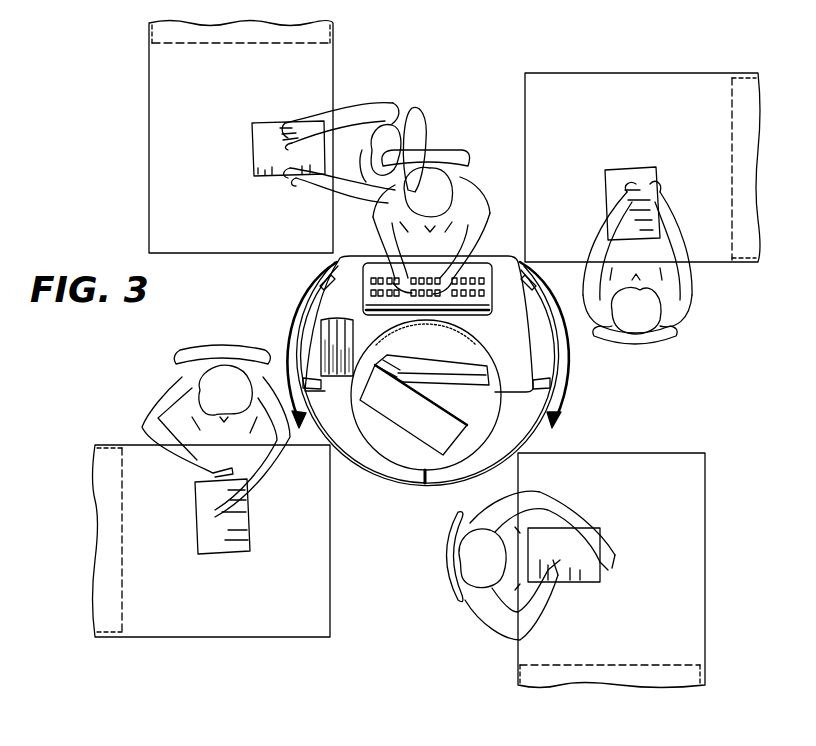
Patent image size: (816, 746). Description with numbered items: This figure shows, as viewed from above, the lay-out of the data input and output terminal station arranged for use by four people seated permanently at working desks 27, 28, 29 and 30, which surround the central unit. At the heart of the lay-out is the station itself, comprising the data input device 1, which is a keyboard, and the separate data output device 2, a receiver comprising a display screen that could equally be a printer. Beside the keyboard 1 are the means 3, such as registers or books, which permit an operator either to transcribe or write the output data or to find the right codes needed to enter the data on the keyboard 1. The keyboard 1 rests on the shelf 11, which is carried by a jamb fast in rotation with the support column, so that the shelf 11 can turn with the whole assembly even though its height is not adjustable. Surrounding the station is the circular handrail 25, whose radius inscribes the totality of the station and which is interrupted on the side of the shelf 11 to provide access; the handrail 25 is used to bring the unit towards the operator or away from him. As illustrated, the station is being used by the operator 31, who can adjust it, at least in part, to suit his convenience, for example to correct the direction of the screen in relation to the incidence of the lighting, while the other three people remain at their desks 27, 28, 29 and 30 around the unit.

The data input device 1 is at (488, 297).
The data output device 2 is at (487, 369).
The means for transcribing or writing output data 3 is at (339, 319).
The shelf 11 is at (516, 345).
The circular handrail 25 is at (401, 479).
The working desk 27 is at (262, 245).
The working desk 28 is at (289, 589).
The working desk 29 is at (663, 600).
The working desk 30 is at (557, 255).
The operator 31 is at (434, 188).